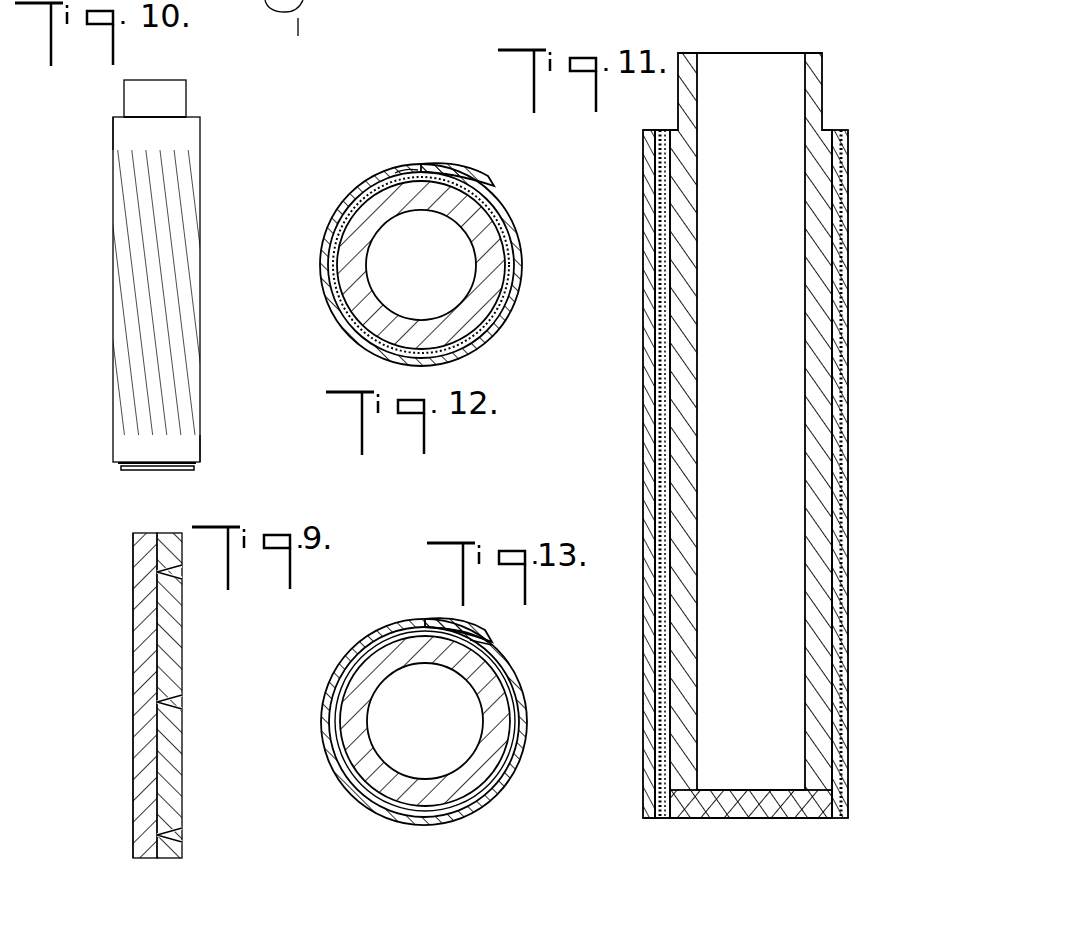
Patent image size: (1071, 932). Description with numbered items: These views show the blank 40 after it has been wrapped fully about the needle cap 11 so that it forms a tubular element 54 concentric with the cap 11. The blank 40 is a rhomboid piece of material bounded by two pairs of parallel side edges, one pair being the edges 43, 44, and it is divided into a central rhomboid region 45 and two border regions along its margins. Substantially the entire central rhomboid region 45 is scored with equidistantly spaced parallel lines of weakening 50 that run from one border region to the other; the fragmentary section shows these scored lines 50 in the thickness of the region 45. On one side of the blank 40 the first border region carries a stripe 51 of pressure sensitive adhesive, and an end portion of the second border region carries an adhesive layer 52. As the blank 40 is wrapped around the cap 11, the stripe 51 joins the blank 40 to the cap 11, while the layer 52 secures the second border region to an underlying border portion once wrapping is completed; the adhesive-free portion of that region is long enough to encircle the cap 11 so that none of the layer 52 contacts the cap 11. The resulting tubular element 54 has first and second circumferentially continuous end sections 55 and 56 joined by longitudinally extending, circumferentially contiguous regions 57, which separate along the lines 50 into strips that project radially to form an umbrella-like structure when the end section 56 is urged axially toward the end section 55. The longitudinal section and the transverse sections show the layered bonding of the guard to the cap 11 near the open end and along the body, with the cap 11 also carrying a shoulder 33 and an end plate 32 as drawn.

In FIG. 10, the needle cap 11 is at (124, 78).
In FIG. 12, the needle cap 11 is at (492, 258).
In FIG. 13, the needle cap 11 is at (496, 704).
In FIG. 11, the needle cap 11 is at (678, 66).
In FIG. 10, the bottom end plate 32 is at (122, 470).
In FIG. 11, the bottom end plate 32 is at (700, 818).
In FIG. 10, the shoulder 33 is at (150, 117).
In FIG. 11, the shoulder 33 is at (826, 130).
In FIG. 9, the blank 40 is at (128, 632).
In FIG. 13, the side edge 43 is at (410, 620).
In FIG. 12, the side edge 44 is at (492, 182).
In FIG. 13, the side edge 44 is at (488, 636).
In FIG. 9, the central rhomboid region 45 is at (186, 642).
In FIG. 9, the lines of weakening 50 is at (162, 702).
In FIG. 12, the adhesive stripe 51 is at (397, 174).
In FIG. 13, the adhesive layer 52 is at (494, 645).
In FIG. 10, the tubular element 54 is at (160, 289).
In FIG. 12, the tubular element 54 is at (416, 245).
In FIG. 13, the tubular element 54 is at (432, 701).
In FIG. 11, the tubular element 54 is at (719, 474).
In FIG. 10, the first end section 55 is at (190, 128).
In FIG. 12, the first end section 55 is at (428, 156).
In FIG. 11, the first end section 55 is at (645, 130).
In FIG. 10, the second end section 56 is at (188, 448).
In FIG. 13, the second end section 56 is at (388, 628).
In FIG. 11, the second end section 56 is at (645, 806).
In FIG. 10, the longitudinally extending regions 57 is at (150, 262).
In FIG. 11, the longitudinally extending regions 57 is at (643, 452).